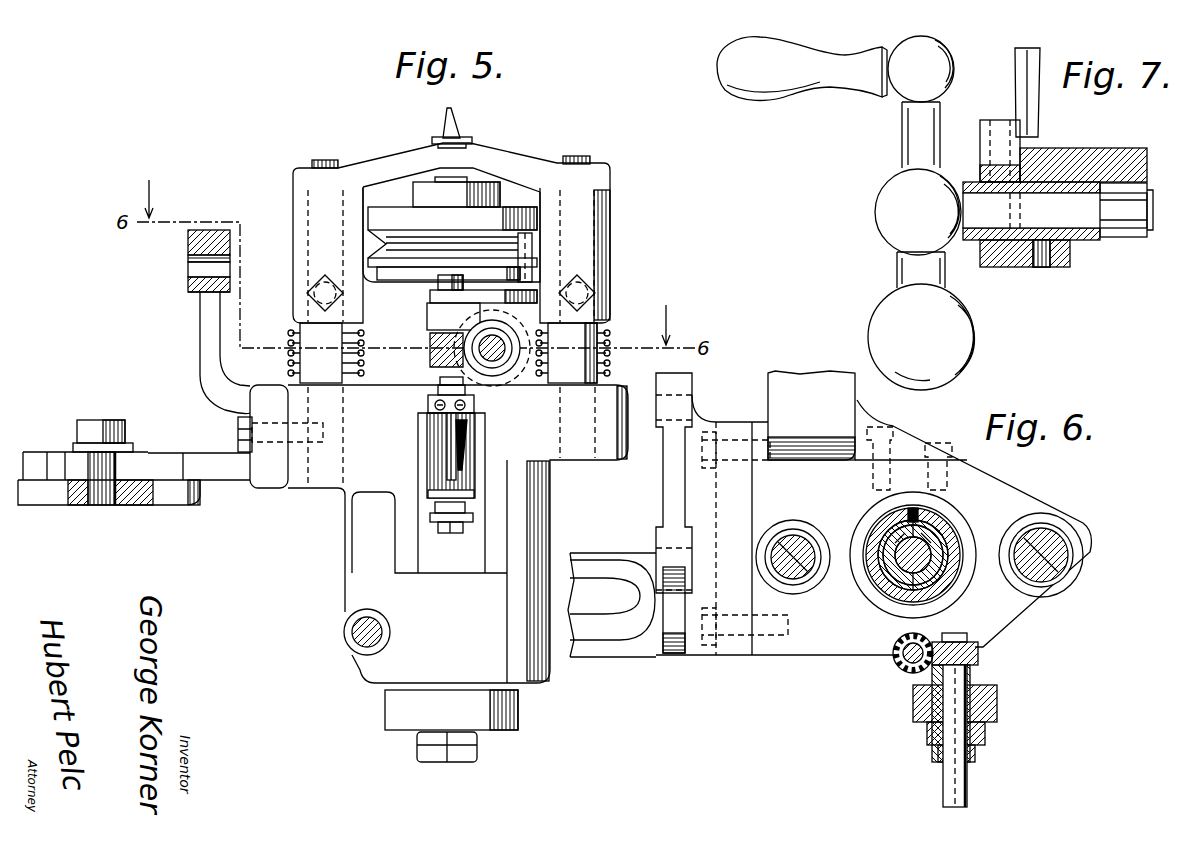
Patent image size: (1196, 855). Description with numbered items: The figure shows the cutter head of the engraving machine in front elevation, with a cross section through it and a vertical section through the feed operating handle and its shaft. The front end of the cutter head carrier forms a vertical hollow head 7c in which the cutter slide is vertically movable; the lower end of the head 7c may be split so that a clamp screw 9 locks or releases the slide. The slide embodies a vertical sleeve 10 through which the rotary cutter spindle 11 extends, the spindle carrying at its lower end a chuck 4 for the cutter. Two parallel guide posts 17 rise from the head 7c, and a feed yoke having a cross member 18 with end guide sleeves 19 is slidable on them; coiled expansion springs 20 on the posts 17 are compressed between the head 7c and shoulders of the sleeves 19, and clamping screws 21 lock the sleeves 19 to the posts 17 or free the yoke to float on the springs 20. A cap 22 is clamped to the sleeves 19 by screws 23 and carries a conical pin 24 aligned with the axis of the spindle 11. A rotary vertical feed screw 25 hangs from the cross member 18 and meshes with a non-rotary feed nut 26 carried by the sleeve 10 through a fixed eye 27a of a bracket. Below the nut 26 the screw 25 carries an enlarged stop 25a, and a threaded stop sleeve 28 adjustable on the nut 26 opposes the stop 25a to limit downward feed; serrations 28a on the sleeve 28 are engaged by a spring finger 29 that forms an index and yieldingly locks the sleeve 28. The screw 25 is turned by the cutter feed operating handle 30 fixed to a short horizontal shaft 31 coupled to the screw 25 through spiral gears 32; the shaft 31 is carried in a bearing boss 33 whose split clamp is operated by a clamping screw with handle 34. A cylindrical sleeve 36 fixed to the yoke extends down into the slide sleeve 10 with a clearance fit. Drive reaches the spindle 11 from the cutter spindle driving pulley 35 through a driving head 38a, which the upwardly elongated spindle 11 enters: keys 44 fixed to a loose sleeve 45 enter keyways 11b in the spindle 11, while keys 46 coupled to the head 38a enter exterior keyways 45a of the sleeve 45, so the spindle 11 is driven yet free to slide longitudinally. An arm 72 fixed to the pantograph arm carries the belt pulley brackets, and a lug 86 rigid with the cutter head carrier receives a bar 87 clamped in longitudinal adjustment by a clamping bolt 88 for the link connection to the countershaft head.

In FIG. 5, the chuck 4 is at (478, 740).
In FIG. 5, the vertical hollow head 7c is at (439, 534).
In FIG. 5, the clamp screw 9 is at (350, 628).
In FIG. 5, the vertical sleeve 10 is at (455, 550).
In FIG. 6, the vertical sleeve 10 is at (880, 572).
In FIG. 6, the rotary cutter spindle 11 is at (930, 525).
In FIG. 6, the keyways 11b is at (913, 508).
In FIG. 5, the guide posts 17 is at (308, 240).
In FIG. 6, the guide posts 17 is at (800, 545).
In FIG. 5, the cross member 18 is at (458, 302).
In FIG. 5, the end guide sleeves 19 is at (300, 220).
In FIG. 6, the end guide sleeves 19 is at (790, 540).
In FIG. 5, the coiled expansion springs 20 is at (290, 374).
In FIG. 6, the coiled expansion springs 20 is at (812, 558).
In FIG. 5, the clamping screws 21 is at (313, 292).
In FIG. 5, the cap 22 is at (500, 155).
In FIG. 5, the screws 23 is at (338, 150).
In FIG. 5, the vertical pin 24 is at (457, 122).
In FIG. 5, the feed screw 25 is at (430, 390).
In FIG. 6, the feed screw 25 is at (893, 648).
In FIG. 5, the stop 25a is at (440, 528).
In FIG. 5, the feed nut 26 is at (430, 430).
In FIG. 5, the eye 27a is at (430, 403).
In FIG. 5, the stop sleeve 28 is at (430, 497).
In FIG. 5, the serrations 28a is at (468, 470).
In FIG. 5, the spring finger 29 is at (448, 450).
In FIG. 7, the cutter feed operating handle 30 is at (790, 97).
In FIG. 5, the feed screw operating shaft 31 is at (495, 372).
In FIG. 6, the feed screw operating shaft 31 is at (952, 774).
In FIG. 7, the feed screw operating shaft 31 is at (1055, 210).
In FIG. 5, the spiral gears 32 is at (432, 340).
In FIG. 6, the spiral gears 32 is at (970, 640).
In FIG. 7, the spiral gears 32 is at (1125, 238).
In FIG. 5, the bearing boss 33 is at (503, 339).
In FIG. 6, the bearing boss 33 is at (985, 692).
In FIG. 7, the bearing boss 33 is at (1060, 160).
In FIG. 5, the handle 34 is at (532, 245).
In FIG. 7, the handle 34 is at (1018, 82).
In FIG. 5, the cutter spindle driving pulley 35 is at (390, 222).
In FIG. 6, the fixed sleeve 36 is at (950, 530).
In FIG. 6, the driving head 38a is at (935, 515).
In FIG. 6, the keys 44 is at (880, 555).
In FIG. 6, the sleeve 45 is at (893, 525).
In FIG. 6, the exterior keyways 45a is at (925, 485).
In FIG. 6, the keys 46 is at (925, 510).
In FIG. 5, the arm 72 is at (205, 318).
In FIG. 6, the arm 72 is at (670, 493).
In FIG. 5, the lug 86 is at (215, 470).
In FIG. 5, the bar 87 is at (165, 492).
In FIG. 5, the clamping bolt 88 is at (95, 430).